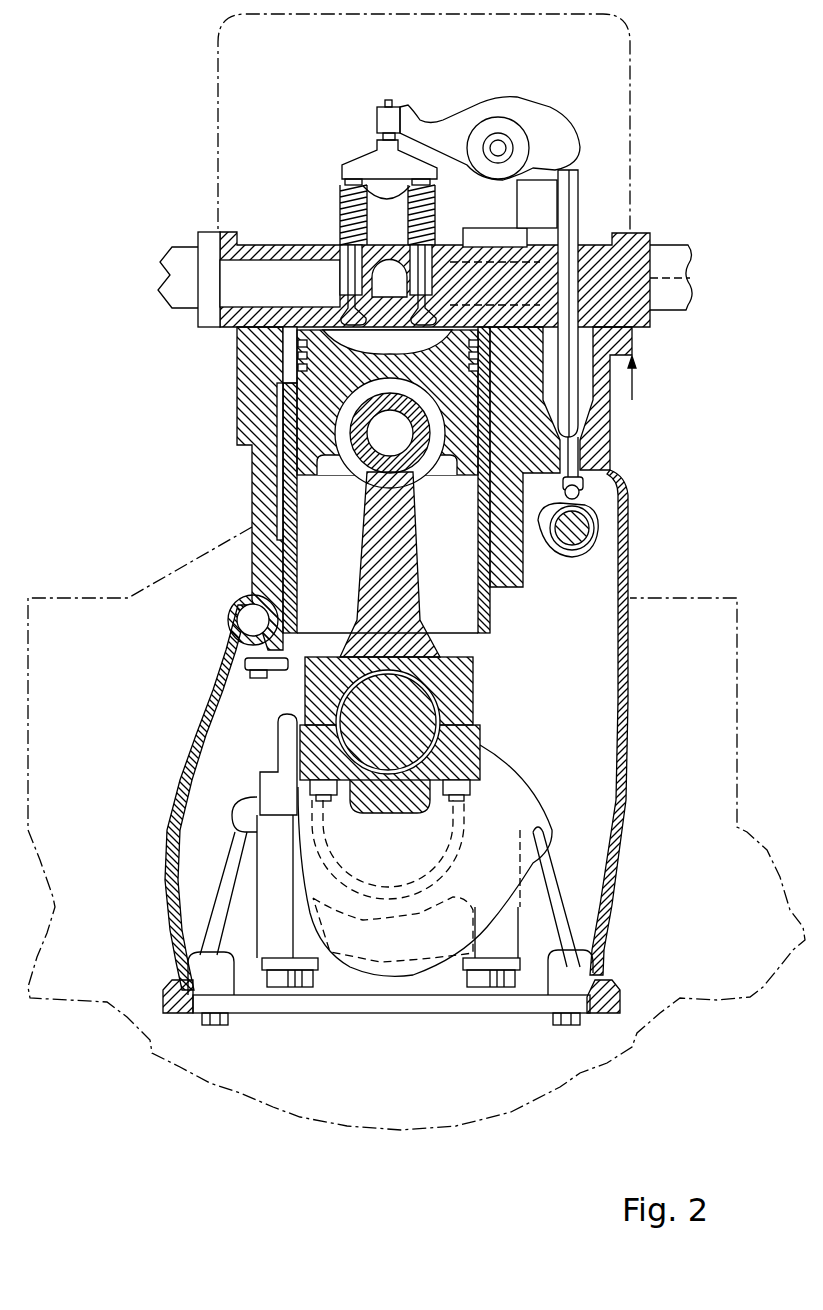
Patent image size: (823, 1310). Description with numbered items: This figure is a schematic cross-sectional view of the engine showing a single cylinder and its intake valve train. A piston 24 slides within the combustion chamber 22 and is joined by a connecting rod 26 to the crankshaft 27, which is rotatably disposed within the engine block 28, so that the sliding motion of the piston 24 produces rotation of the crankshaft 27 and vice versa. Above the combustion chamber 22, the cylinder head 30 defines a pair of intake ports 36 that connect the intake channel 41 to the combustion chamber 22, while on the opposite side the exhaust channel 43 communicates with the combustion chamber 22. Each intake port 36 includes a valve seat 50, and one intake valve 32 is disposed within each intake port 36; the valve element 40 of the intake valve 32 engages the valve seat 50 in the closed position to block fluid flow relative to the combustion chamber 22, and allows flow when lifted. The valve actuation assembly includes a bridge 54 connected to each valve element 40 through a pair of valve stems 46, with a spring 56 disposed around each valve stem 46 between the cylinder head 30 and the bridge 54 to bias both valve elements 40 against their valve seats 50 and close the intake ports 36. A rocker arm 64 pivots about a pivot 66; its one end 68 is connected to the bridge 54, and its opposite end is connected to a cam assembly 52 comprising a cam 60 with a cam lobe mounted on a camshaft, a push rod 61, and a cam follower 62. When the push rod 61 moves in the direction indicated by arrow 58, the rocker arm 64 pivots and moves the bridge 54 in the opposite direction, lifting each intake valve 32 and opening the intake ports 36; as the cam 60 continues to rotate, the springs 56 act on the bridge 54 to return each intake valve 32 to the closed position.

The combustion chamber 22 is at (300, 513).
The piston 24 is at (300, 447).
The connecting rod 26 is at (403, 620).
The crankshaft 27 is at (513, 800).
The engine block 28 is at (260, 558).
The cylinder head 30 is at (632, 317).
The intake valve 32 is at (338, 263).
The intake port 36 is at (340, 310).
The valve element 40 is at (417, 313).
The intake channel 41 is at (228, 281).
The exhaust channel 43 is at (690, 263).
The valve stem 46 is at (340, 218).
The valve seat 50 is at (350, 360).
The cam assembly 52 is at (720, 420).
The bridge 54 is at (365, 165).
The spring 56 is at (348, 198).
The arrow 58 is at (633, 390).
The cam 60 is at (557, 553).
The push rod 61 is at (577, 417).
The cam follower 62 is at (580, 493).
The rocker arm 64 is at (550, 132).
The pivot 66 is at (500, 143).
The end of rocker arm 68 is at (387, 104).